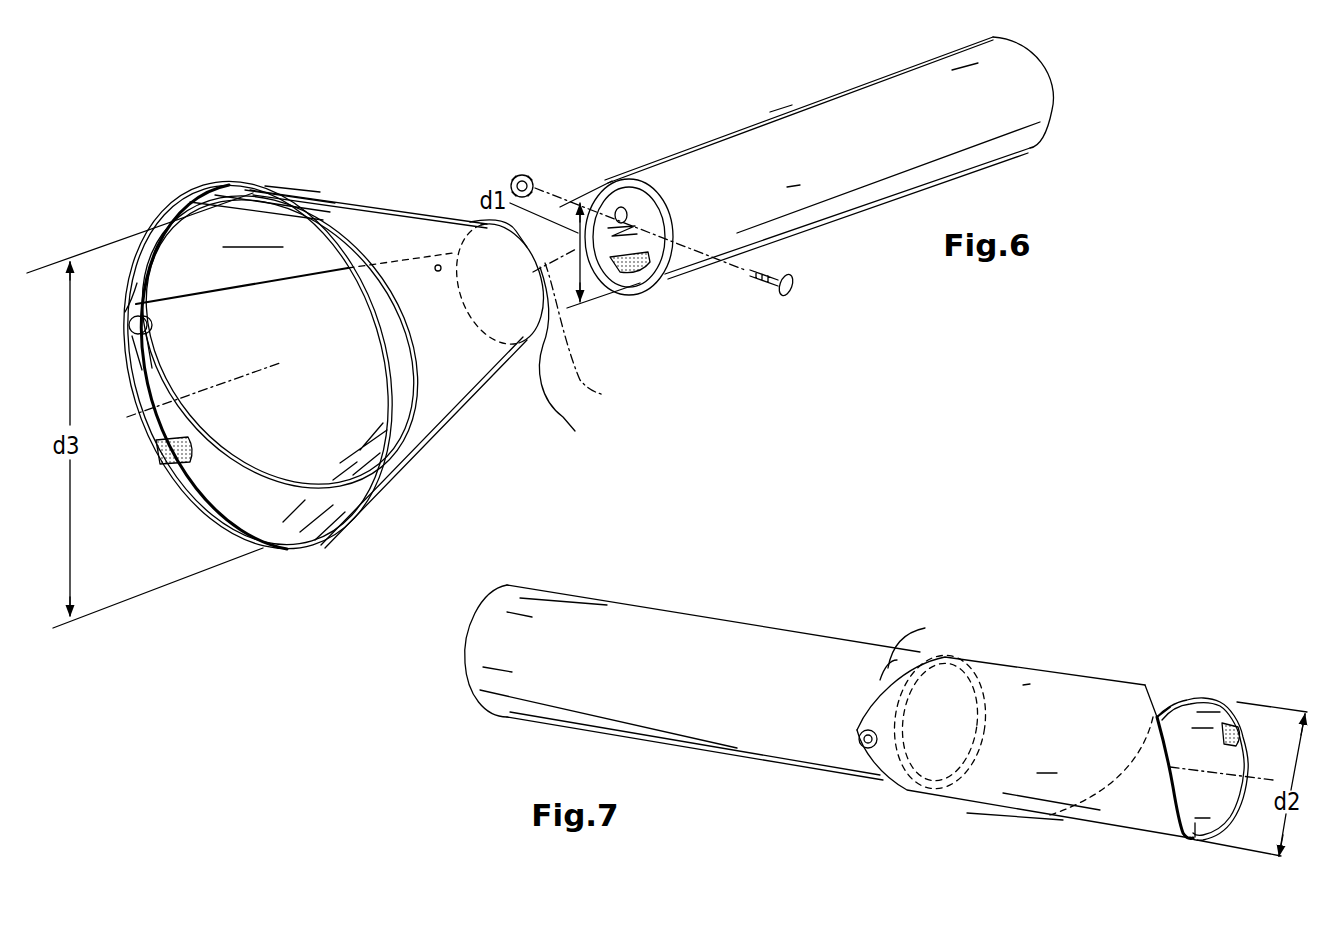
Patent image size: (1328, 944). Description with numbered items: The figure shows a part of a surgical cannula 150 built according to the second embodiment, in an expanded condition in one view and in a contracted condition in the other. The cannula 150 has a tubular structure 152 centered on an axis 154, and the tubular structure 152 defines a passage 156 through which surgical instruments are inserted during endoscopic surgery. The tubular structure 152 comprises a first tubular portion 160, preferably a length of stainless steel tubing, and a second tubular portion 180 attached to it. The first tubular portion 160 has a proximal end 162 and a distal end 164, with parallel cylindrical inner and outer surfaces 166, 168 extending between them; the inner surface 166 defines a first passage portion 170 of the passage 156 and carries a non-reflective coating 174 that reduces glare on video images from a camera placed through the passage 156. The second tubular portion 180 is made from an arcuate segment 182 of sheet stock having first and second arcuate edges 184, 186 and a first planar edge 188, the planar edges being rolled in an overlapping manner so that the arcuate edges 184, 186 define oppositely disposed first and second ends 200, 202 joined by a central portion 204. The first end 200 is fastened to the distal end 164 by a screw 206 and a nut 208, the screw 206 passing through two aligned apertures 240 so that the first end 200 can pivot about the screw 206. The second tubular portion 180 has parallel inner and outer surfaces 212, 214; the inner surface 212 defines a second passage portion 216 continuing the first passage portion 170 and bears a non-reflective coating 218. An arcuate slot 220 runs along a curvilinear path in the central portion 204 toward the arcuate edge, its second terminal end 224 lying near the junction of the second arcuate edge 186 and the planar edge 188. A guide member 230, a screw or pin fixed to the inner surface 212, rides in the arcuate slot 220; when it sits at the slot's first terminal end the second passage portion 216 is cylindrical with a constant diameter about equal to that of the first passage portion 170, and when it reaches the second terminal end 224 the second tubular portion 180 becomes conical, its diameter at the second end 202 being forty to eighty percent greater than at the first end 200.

In FIG. 6, the cannula 150 is at (262, 140).
In FIG. 7, the cannula 150 is at (815, 582).
In FIG. 6, the tubular structure 152 is at (667, 283).
In FIG. 7, the tubular structure 152 is at (822, 629).
In FIG. 6, the axis 154 is at (599, 336).
In FIG. 7, the axis 154 is at (1271, 772).
In FIG. 6, the passage 156 is at (640, 217).
In FIG. 7, the passage 156 is at (1222, 765).
In FIG. 6, the first tubular portion 160 is at (940, 186).
In FIG. 7, the first tubular portion 160 is at (655, 602).
In FIG. 6, the proximal end 162 is at (1038, 103).
In FIG. 7, the proximal end 162 is at (470, 622).
In FIG. 6, the distal end 164 is at (603, 188).
In FIG. 7, the distal end 164 is at (1003, 675).
In FIG. 6, the inner surface 166 is at (612, 287).
In FIG. 6, the outer surface 168 is at (797, 127).
In FIG. 6, the first passage portion 170 is at (660, 257).
In FIG. 6, the non-reflective coating 174 is at (596, 200).
In FIG. 6, the second tubular portion 180 is at (452, 428).
In FIG. 7, the second tubular portion 180 is at (1087, 660).
In FIG. 6, the arcuate segment 182 is at (341, 511).
In FIG. 6, the first arcuate edge 184 is at (581, 355).
In FIG. 6, the second arcuate edge 186 is at (293, 560).
In FIG. 6, the first planar edge 188 is at (268, 278).
In FIG. 6, the first end 200 is at (492, 222).
In FIG. 7, the first end 200 is at (897, 660).
In FIG. 6, the second end 202 is at (213, 485).
In FIG. 7, the second end 202 is at (1237, 707).
In FIG. 6, the central portion 204 is at (378, 232).
In FIG. 7, the central portion 204 is at (1042, 687).
In FIG. 6, the screw 206 is at (797, 281).
In FIG. 6, the nut 208 is at (522, 175).
In FIG. 7, the nut 208 is at (866, 748).
In FIG. 6, the inner surface 212 is at (153, 450).
In FIG. 7, the inner surface 212 is at (1224, 722).
In FIG. 6, the outer surface 214 is at (420, 430).
In FIG. 7, the outer surface 214 is at (1165, 703).
In FIG. 6, the second passage portion 216 is at (182, 212).
In FIG. 7, the second passage portion 216 is at (1188, 808).
In FIG. 6, the non-reflective coating 218 is at (285, 513).
In FIG. 7, the non-reflective coating 218 is at (1193, 838).
In FIG. 6, the arcuate slot 220 is at (160, 393).
In FIG. 6, the second terminal end 224 is at (147, 370).
In FIG. 6, the guide member 230 is at (128, 296).
In FIG. 6, the apertures 240 is at (436, 272).